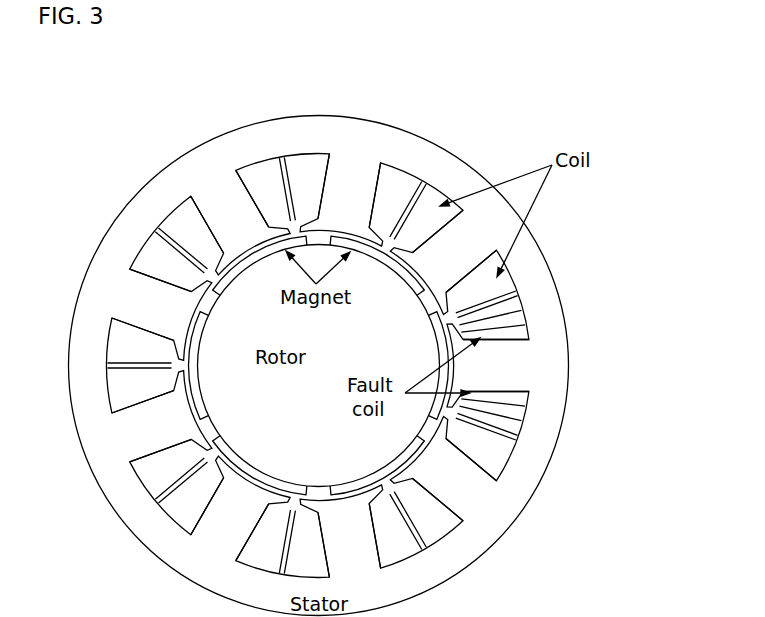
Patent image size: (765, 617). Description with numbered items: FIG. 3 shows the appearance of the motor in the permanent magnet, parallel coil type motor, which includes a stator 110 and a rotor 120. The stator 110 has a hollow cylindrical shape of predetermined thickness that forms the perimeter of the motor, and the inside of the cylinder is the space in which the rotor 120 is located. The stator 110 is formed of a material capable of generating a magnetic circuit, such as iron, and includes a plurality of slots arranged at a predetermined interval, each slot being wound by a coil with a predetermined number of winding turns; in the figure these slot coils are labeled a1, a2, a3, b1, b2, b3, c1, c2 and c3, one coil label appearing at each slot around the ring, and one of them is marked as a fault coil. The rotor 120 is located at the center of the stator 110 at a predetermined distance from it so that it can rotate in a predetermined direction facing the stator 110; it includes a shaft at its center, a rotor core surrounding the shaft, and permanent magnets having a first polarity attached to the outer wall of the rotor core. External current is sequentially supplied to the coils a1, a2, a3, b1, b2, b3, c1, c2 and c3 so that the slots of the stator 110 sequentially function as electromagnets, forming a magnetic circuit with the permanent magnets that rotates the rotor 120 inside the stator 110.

The stator 110 is at (172, 190).
The rotor 120 is at (253, 442).
The phase a tooth 1 (fault coil) a1 is at (493, 366).
The phase a tooth 2 coil a2 is at (225, 213).
The phase a tooth 3 coil a3 is at (225, 517).
The phase b tooth 1 coil b1 is at (455, 248).
The phase b tooth 2 coil b2 is at (156, 297).
The phase b tooth 3 coil b3 is at (353, 535).
The phase c tooth 1 coil c1 is at (353, 195).
The phase c tooth 2 coil c2 is at (156, 433).
The phase c tooth 3 coil c3 is at (455, 482).